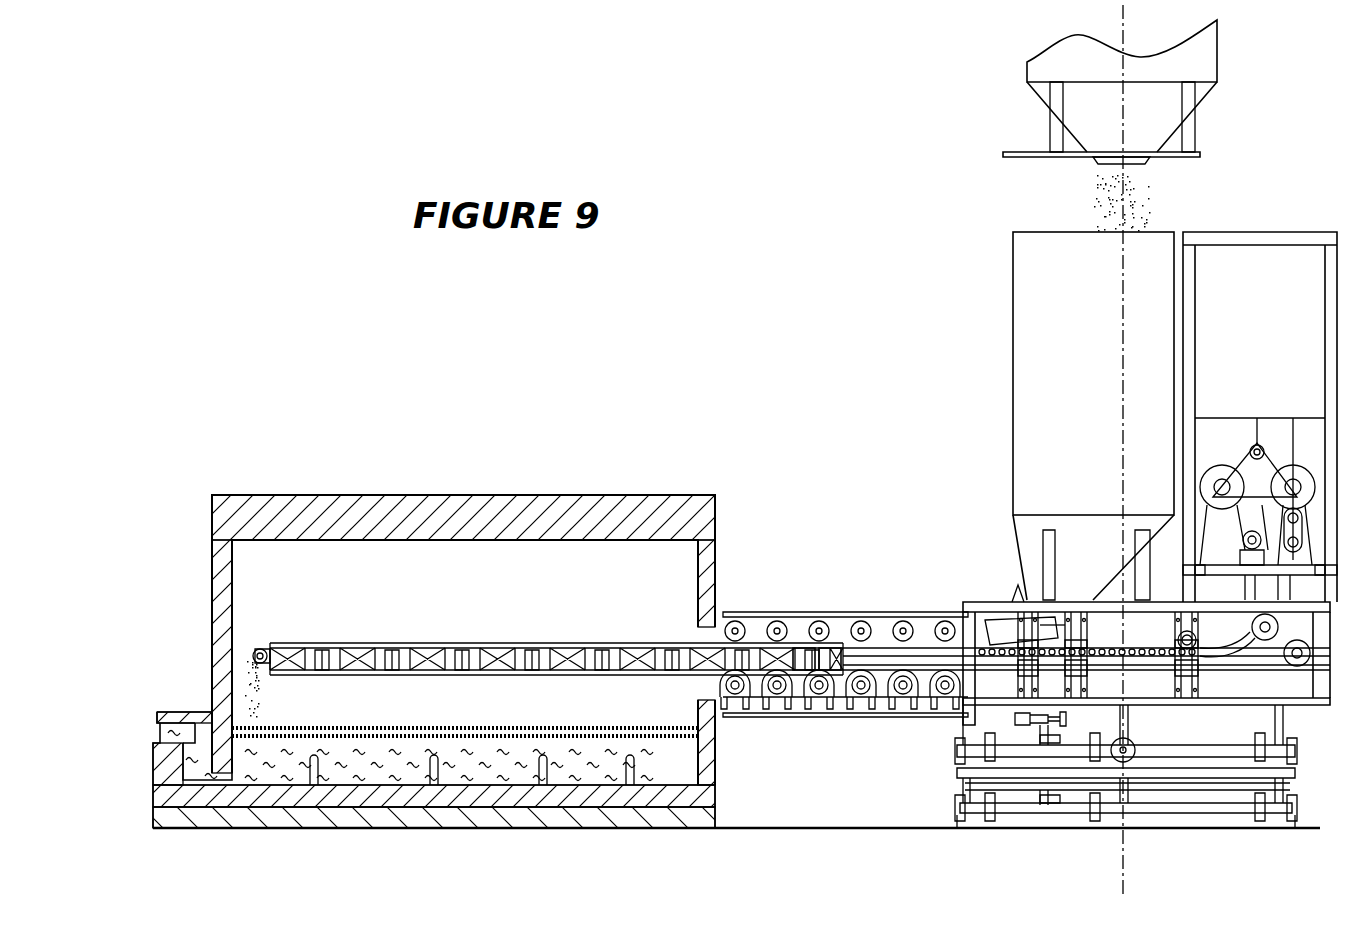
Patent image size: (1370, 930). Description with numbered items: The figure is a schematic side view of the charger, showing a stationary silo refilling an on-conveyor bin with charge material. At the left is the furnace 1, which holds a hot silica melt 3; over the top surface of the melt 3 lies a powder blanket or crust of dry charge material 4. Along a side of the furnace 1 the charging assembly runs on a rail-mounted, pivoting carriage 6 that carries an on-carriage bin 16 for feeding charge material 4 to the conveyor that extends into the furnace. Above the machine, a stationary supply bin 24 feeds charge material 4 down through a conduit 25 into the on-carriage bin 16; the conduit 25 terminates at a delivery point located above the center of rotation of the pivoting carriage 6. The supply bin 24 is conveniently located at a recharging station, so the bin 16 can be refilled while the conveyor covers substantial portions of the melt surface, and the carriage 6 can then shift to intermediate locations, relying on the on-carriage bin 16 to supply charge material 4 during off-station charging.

The furnace 1 is at (491, 466).
The melt 3 is at (525, 763).
The charge material 4 is at (1098, 196).
The carriage 6 is at (958, 748).
The on-carriage bin 16 is at (1046, 447).
The stationary supply bin 24 is at (1058, 55).
The conduit 25 is at (1093, 124).